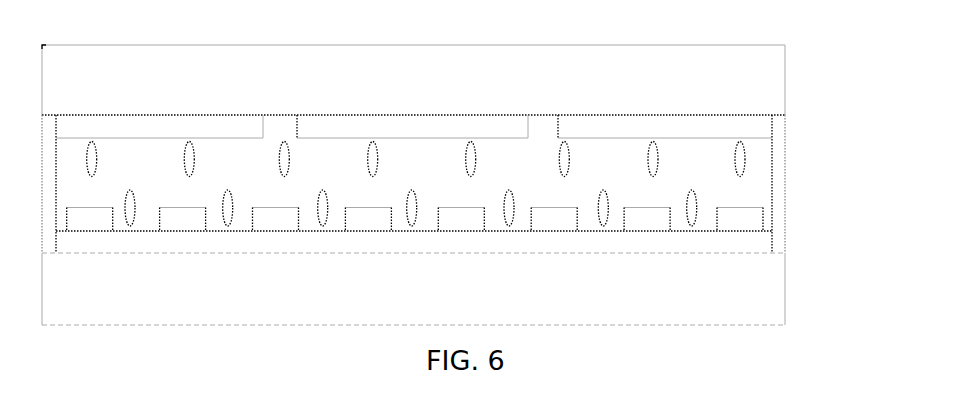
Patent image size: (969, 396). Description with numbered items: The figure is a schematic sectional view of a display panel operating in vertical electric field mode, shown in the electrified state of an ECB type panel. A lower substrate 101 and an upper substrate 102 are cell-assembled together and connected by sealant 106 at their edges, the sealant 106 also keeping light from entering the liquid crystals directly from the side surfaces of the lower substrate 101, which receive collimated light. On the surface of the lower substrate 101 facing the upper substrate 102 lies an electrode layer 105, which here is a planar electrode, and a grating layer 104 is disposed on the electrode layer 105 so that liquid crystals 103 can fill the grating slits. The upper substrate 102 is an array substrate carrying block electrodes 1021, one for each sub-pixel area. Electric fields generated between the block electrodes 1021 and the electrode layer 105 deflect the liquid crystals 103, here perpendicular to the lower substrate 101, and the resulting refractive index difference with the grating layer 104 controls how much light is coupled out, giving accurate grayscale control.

The lower substrate 101 is at (785, 312).
The upper substrate 102 is at (787, 85).
The block electrodes 1021 is at (765, 132).
The liquid crystals 103 is at (747, 165).
The grating layer 104 is at (763, 220).
The electrode layer 105 is at (762, 248).
The sealant 106 is at (785, 176).